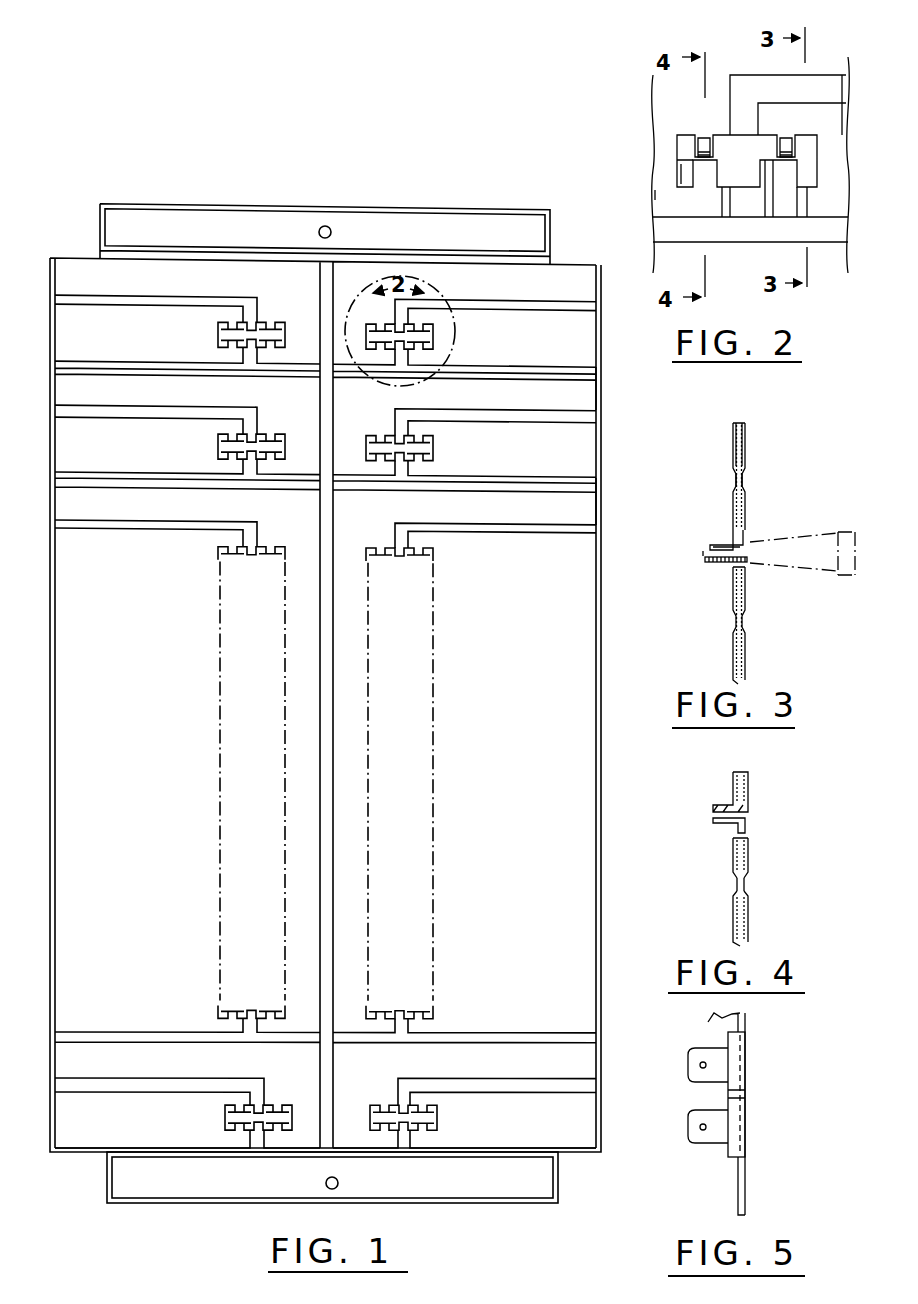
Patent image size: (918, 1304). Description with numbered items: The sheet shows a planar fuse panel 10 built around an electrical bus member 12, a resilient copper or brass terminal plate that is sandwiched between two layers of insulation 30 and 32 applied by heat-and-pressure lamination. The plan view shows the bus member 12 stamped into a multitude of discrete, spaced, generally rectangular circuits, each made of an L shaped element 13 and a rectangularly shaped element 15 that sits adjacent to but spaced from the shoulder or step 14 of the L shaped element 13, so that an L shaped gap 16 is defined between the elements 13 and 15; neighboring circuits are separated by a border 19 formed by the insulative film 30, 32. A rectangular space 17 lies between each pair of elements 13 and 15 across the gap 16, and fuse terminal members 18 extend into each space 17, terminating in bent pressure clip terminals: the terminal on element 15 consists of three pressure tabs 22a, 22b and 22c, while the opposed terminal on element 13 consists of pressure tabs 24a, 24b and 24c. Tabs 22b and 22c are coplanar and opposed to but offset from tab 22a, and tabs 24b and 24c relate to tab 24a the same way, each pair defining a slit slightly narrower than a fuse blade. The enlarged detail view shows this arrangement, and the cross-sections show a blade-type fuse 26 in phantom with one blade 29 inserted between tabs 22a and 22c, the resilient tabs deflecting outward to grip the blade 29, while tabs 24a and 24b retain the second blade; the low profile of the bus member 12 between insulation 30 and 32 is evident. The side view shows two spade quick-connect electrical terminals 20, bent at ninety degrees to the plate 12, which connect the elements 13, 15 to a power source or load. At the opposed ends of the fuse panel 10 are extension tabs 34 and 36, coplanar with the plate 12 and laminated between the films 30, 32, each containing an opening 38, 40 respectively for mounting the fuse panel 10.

In FIG. 1, the planar fuse panel 10 is at (253, 190).
In FIG. 1, the electrical bus member 12 is at (90, 272).
In FIG. 2, the electrical bus member 12 is at (668, 194).
In FIG. 3, the electrical bus member 12 is at (747, 458).
In FIG. 4, the electrical bus member 12 is at (750, 915).
In FIG. 1, the L shaped element 13 is at (556, 279).
In FIG. 1, the shoulder 14 is at (398, 325).
In FIG. 4, the shoulder 14 is at (750, 858).
In FIG. 1, the rectangularly shaped element 15 is at (583, 340).
In FIG. 2, the rectangularly shaped element 15 is at (838, 125).
In FIG. 1, the L shaped gap 16 is at (584, 302).
In FIG. 2, the L shaped gap 16 is at (818, 93).
In FIG. 3, the L shaped gap 16 is at (744, 484).
In FIG. 1, the rectangular space 17 is at (407, 321).
In FIG. 2, the rectangular space 17 is at (742, 150).
In FIG. 1, the fuse terminal member 18 is at (374, 1113).
In FIG. 2, the fuse terminal member 18 is at (678, 149).
In FIG. 1, the border 19 is at (572, 486).
In FIG. 2, the border 19 is at (665, 224).
In FIG. 3, the border 19 is at (746, 622).
In FIG. 4, the border 19 is at (738, 885).
In FIG. 5, the electrical terminal 20 is at (693, 1051).
In FIG. 2, the pressure tab 22a is at (784, 148).
In FIG. 3, the pressure tab 22a is at (720, 543).
In FIG. 2, the pressure tab 22b is at (755, 201).
In FIG. 2, the pressure tab 22c is at (814, 215).
In FIG. 3, the pressure tab 22c is at (720, 567).
In FIG. 2, the pressure tab 24a is at (702, 140).
In FIG. 4, the pressure tab 24a is at (714, 808).
In FIG. 2, the pressure tab 24b is at (680, 175).
In FIG. 4, the pressure tab 24b is at (714, 823).
In FIG. 2, the pressure tab 24c is at (705, 215).
In FIG. 3, the blade-type fuse 26 is at (796, 540).
In FIG. 3, the blade 29 is at (703, 562).
In FIG. 3, the insulation layer 30 is at (748, 445).
In FIG. 3, the insulation layer 32 is at (732, 443).
In FIG. 1, the extension tab 34 is at (402, 226).
In FIG. 1, the extension tab 36 is at (455, 1200).
In FIG. 1, the opening 38 is at (329, 230).
In FIG. 1, the opening 40 is at (326, 1187).